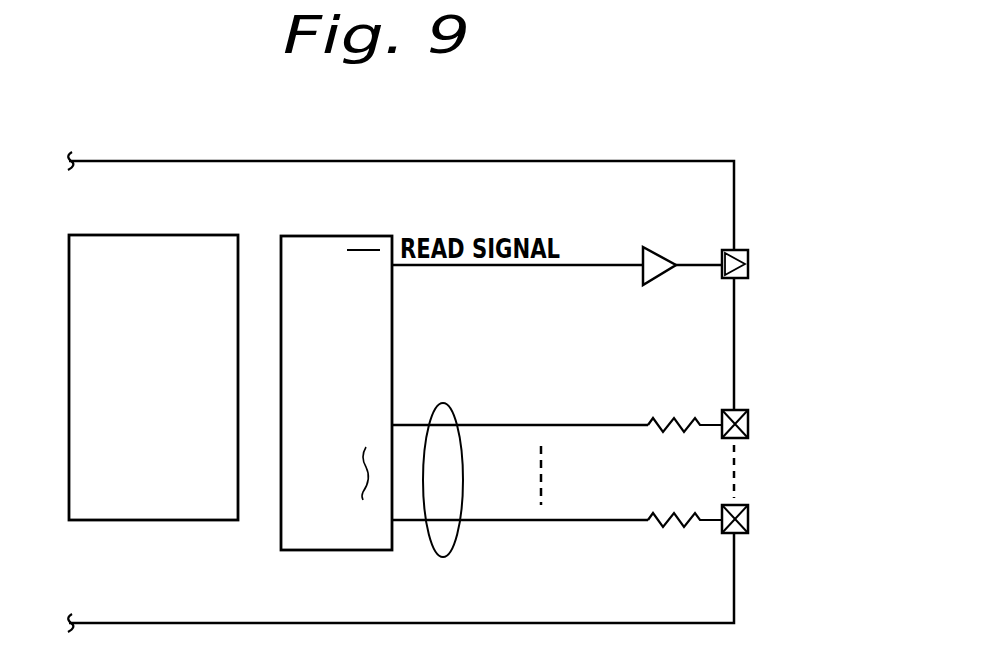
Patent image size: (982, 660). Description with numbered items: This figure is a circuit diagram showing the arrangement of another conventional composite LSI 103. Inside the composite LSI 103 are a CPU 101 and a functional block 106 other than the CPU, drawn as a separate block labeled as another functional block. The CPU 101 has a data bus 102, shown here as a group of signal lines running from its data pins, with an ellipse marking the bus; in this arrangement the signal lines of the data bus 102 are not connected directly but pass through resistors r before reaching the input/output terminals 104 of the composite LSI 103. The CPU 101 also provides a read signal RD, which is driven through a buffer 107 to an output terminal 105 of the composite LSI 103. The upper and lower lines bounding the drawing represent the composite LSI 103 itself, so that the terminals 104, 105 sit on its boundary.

The CPU 101 is at (365, 237).
The data bus 102 is at (455, 545).
The composite LSI 103 is at (494, 161).
The input/output terminals 104 is at (753, 398).
The output terminal 105 is at (745, 251).
The functional block 106 is at (223, 239).
The buffer 107 is at (659, 256).